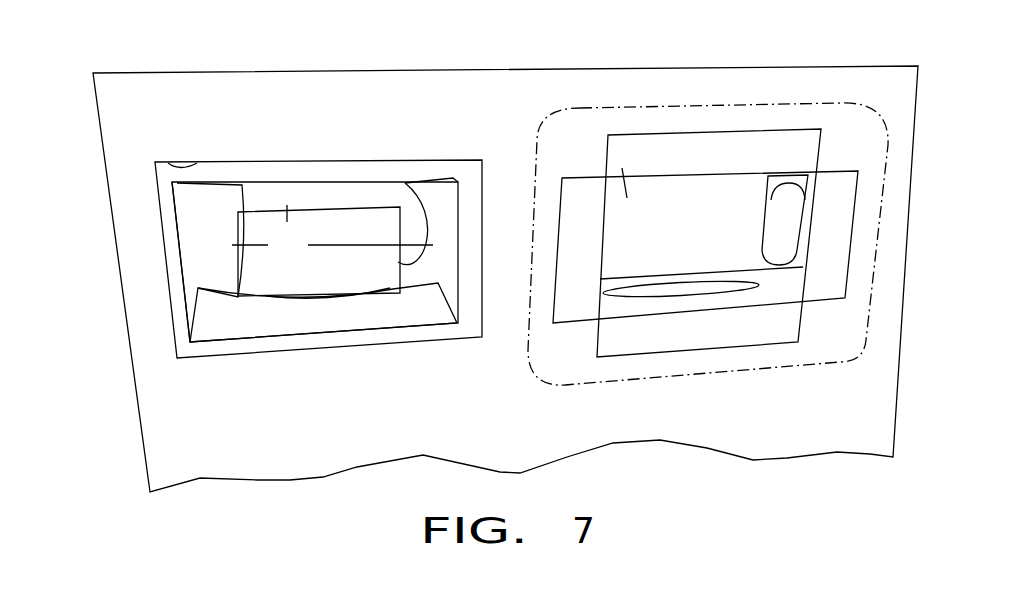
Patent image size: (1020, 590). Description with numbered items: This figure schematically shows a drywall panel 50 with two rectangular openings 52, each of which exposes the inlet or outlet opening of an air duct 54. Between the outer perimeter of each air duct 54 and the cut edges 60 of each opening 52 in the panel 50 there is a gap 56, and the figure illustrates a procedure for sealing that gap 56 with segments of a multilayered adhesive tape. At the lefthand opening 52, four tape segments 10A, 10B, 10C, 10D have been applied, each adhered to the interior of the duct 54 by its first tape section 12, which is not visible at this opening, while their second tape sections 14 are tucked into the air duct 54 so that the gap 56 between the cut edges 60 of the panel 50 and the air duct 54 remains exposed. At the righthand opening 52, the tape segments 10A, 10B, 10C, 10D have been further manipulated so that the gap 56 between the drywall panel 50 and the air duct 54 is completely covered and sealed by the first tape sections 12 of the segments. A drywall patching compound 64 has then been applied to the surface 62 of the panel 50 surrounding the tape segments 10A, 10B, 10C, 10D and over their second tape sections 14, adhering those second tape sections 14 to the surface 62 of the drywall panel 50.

The drywall panel 50 is at (224, 93).
The opening 52 is at (361, 170).
The gap 56 is at (168, 238).
The edges 60 is at (168, 163).
The surface 62 is at (517, 85).
The drywall patching compound 64 is at (795, 113).
The tape segment 10A is at (188, 266).
The tape segment 10B is at (449, 200).
The tape segment 10C is at (336, 180).
The tape segment 10D is at (279, 331).
The first tape section 12 is at (768, 302).
The second tape section 14 is at (310, 312).
The air duct 54 is at (322, 276).